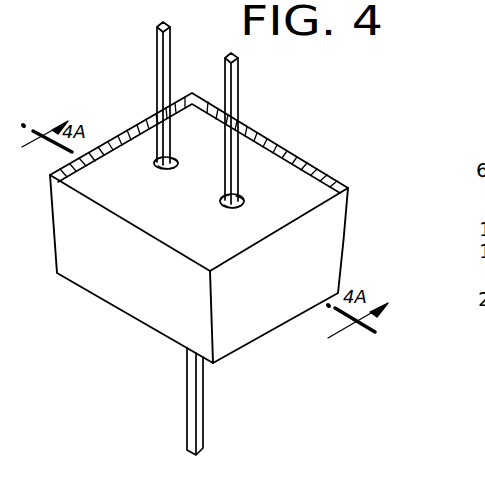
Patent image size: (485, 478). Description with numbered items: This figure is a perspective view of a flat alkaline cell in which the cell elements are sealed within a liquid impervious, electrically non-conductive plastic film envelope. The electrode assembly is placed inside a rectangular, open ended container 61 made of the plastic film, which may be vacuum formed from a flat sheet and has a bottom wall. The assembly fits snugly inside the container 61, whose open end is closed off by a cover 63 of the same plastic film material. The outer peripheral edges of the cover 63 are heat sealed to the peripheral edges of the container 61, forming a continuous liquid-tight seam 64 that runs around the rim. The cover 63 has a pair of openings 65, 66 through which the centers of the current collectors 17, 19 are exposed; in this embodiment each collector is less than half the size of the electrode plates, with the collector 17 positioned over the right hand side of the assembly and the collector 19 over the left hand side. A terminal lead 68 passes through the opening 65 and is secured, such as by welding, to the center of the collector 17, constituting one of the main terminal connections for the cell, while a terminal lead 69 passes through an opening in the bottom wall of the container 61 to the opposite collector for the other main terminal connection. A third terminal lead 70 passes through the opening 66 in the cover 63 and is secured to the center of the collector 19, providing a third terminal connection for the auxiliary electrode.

The current collector 17 is at (238, 205).
The current collector 19 is at (163, 168).
The container 61 is at (152, 312).
The cover 63 is at (253, 170).
The seam 64 is at (318, 167).
The opening 65 is at (242, 200).
The opening 66 is at (154, 160).
The terminal lead 68 is at (238, 105).
The terminal lead 69 is at (200, 410).
The third terminal lead 70 is at (170, 47).